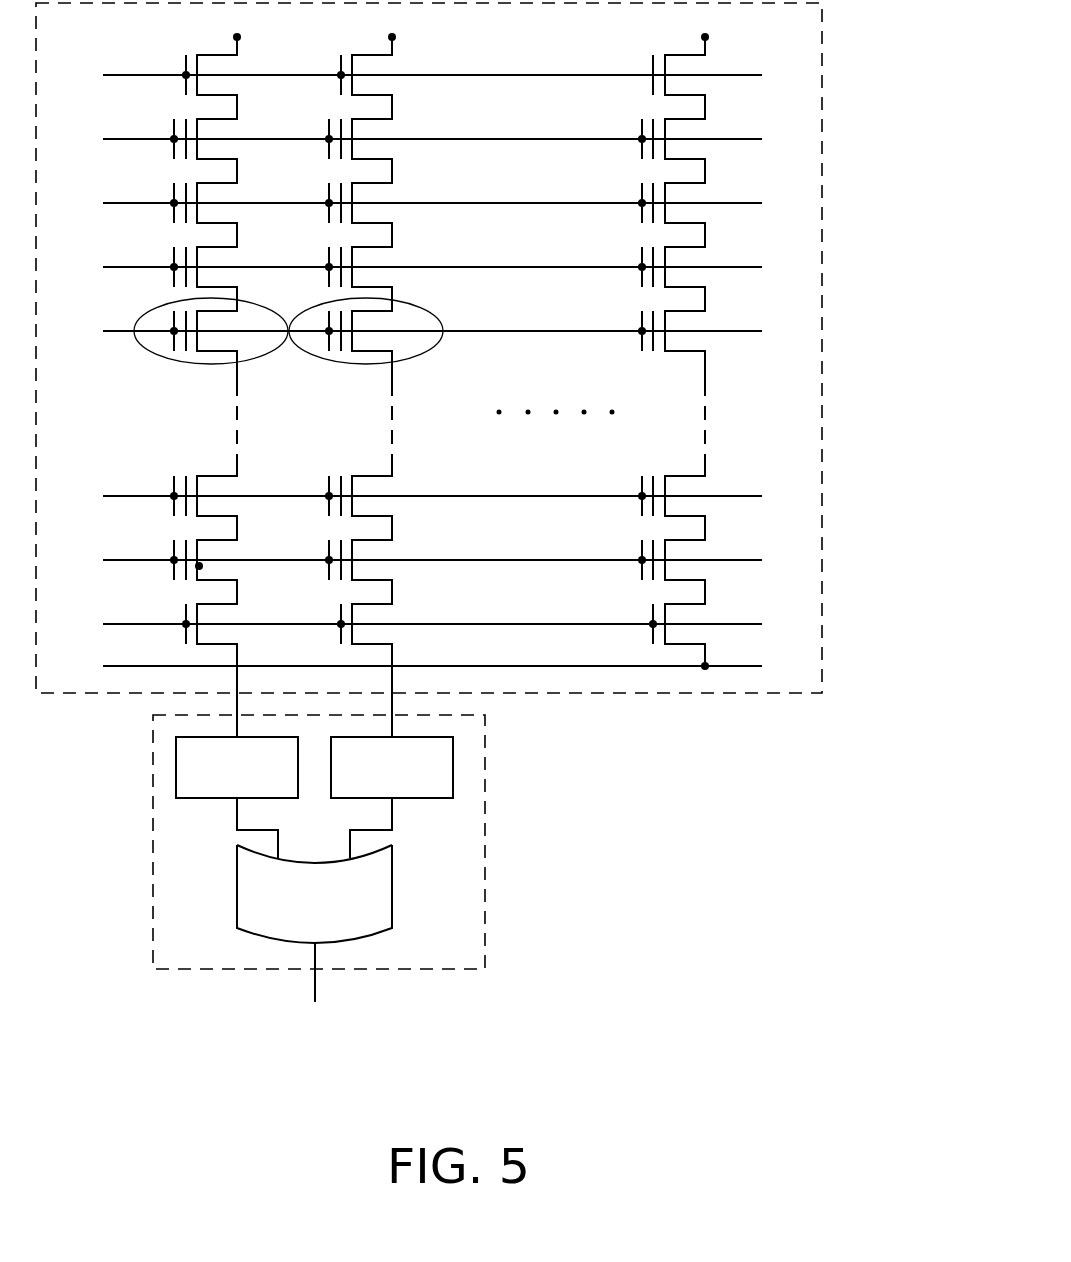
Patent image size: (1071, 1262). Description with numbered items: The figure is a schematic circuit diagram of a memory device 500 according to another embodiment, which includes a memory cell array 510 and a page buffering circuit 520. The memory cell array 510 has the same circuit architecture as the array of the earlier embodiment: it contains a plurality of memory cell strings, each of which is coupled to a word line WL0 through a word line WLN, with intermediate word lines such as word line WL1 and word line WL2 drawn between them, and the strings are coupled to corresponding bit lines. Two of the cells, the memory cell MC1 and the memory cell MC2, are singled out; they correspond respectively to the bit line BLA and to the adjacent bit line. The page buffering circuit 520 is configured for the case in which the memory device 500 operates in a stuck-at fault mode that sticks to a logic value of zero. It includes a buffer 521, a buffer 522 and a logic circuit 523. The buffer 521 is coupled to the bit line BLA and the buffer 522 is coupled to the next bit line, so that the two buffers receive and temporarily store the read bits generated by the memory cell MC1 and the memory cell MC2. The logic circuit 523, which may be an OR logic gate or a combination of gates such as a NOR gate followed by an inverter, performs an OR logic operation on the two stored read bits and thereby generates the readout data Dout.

The memory device 500 is at (486, 518).
The memory cell array 510 is at (486, 370).
The page buffering circuit 520 is at (344, 874).
The buffer 521 is at (176, 767).
The buffer 522 is at (454, 773).
The logic circuit 523 is at (392, 883).
The memory cell MC1 is at (252, 303).
The memory cell MC2 is at (405, 303).
The word line WL0 is at (428, 120).
The word line WL1 is at (428, 183).
The word line WL2 is at (428, 247).
The word line WLN is at (428, 604).
The bit line BLA is at (253, 387).
The readout data Dout is at (312, 988).